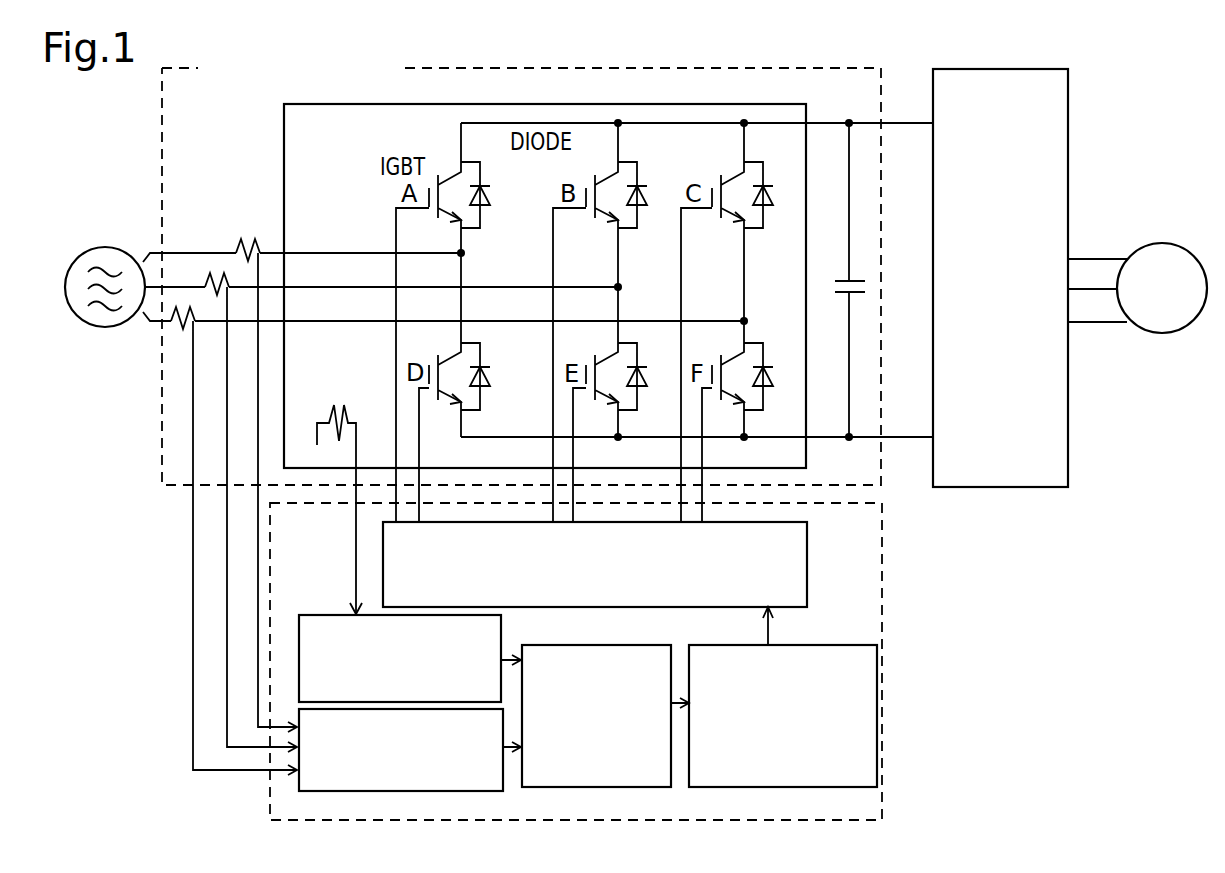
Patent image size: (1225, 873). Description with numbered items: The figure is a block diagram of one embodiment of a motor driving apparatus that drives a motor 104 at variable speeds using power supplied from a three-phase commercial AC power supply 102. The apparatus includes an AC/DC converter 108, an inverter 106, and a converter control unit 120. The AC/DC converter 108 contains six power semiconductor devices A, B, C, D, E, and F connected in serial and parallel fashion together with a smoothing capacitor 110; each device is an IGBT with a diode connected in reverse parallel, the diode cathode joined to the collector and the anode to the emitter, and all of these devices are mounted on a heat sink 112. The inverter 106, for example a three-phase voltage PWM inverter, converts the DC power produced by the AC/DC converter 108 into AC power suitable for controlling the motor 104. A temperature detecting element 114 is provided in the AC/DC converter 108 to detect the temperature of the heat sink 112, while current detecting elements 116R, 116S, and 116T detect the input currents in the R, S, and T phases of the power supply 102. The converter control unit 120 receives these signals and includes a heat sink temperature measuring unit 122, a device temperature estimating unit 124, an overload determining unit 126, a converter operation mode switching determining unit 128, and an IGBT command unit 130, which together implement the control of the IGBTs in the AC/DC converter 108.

The three-phase commercial AC power supply 102 is at (105, 245).
The motor 104 is at (1164, 243).
The inverter 106 is at (1004, 69).
The AC/DC converter 108 is at (633, 68).
The smoothing capacitor 110 is at (871, 287).
The heat sink 112 is at (284, 145).
The temperature detecting element 114 is at (337, 405).
The current detecting element 116R is at (251, 240).
The current detecting element 116S is at (215, 273).
The current detecting element 116T is at (178, 337).
The converter control unit 120 is at (545, 822).
The heat sink temperature measuring unit 122 is at (343, 614).
The device temperature estimating unit 124 is at (360, 792).
The overload determining unit 126 is at (612, 645).
The converter operation mode switching determining unit 128 is at (808, 645).
The IGBT command unit 130 is at (808, 556).